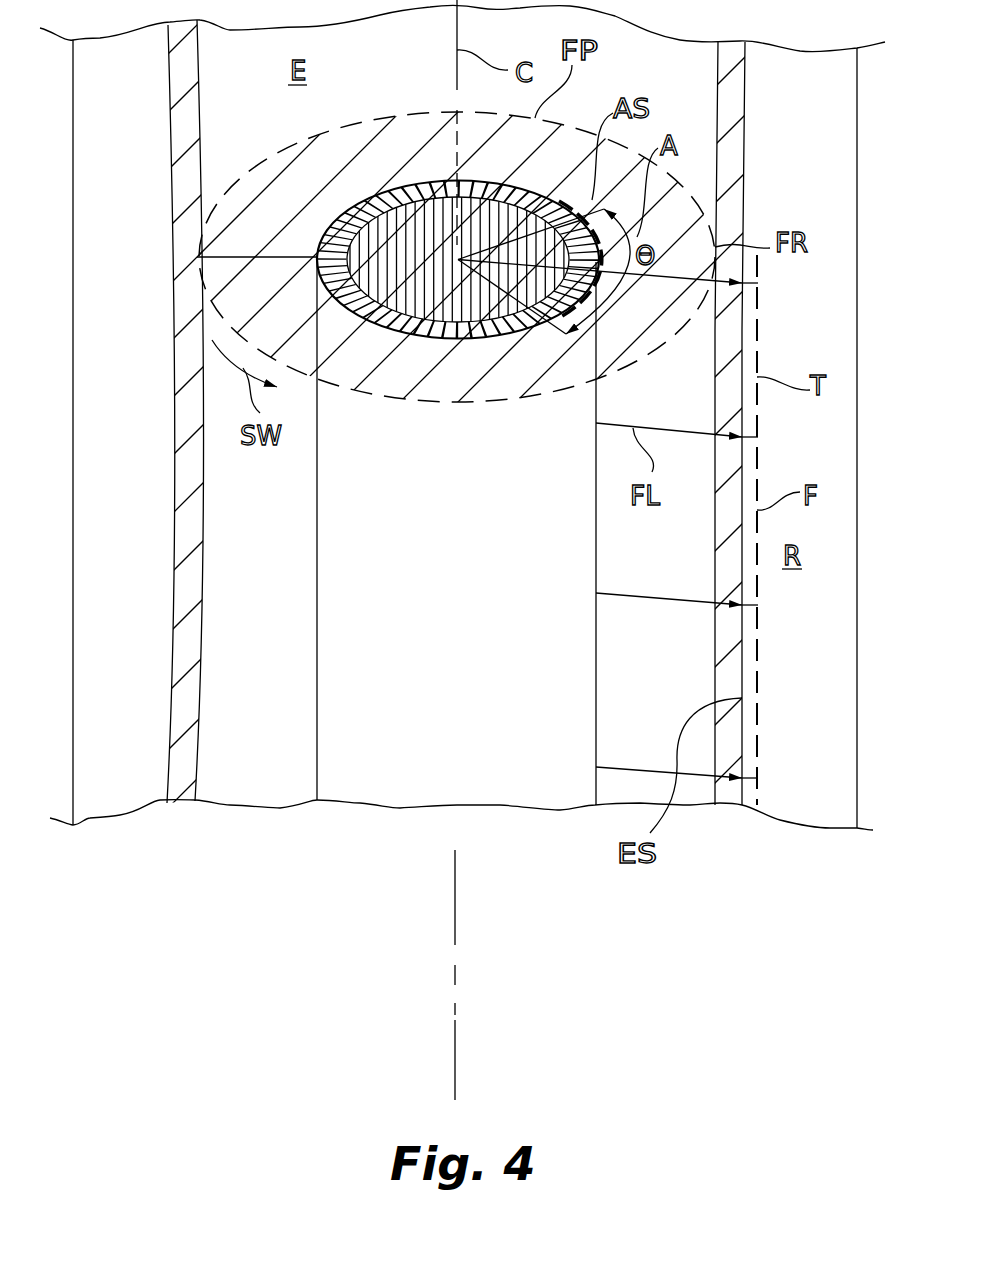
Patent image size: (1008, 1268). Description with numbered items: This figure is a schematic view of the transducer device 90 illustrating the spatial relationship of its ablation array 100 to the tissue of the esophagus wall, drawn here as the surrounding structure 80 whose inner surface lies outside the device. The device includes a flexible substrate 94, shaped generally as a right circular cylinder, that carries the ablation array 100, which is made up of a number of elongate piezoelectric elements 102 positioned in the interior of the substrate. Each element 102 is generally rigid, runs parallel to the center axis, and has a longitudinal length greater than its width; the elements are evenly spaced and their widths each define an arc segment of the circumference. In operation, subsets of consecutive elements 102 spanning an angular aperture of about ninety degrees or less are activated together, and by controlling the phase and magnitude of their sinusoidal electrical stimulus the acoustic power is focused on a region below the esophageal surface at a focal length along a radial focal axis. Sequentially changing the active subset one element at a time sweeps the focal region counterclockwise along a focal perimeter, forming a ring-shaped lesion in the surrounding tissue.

The wall 80 is at (176, 512).
The transducer device 90 is at (597, 732).
The flexible substrate 94 is at (476, 604).
The ablation array 100 is at (393, 180).
The piezoelectric elements 102 is at (480, 185).